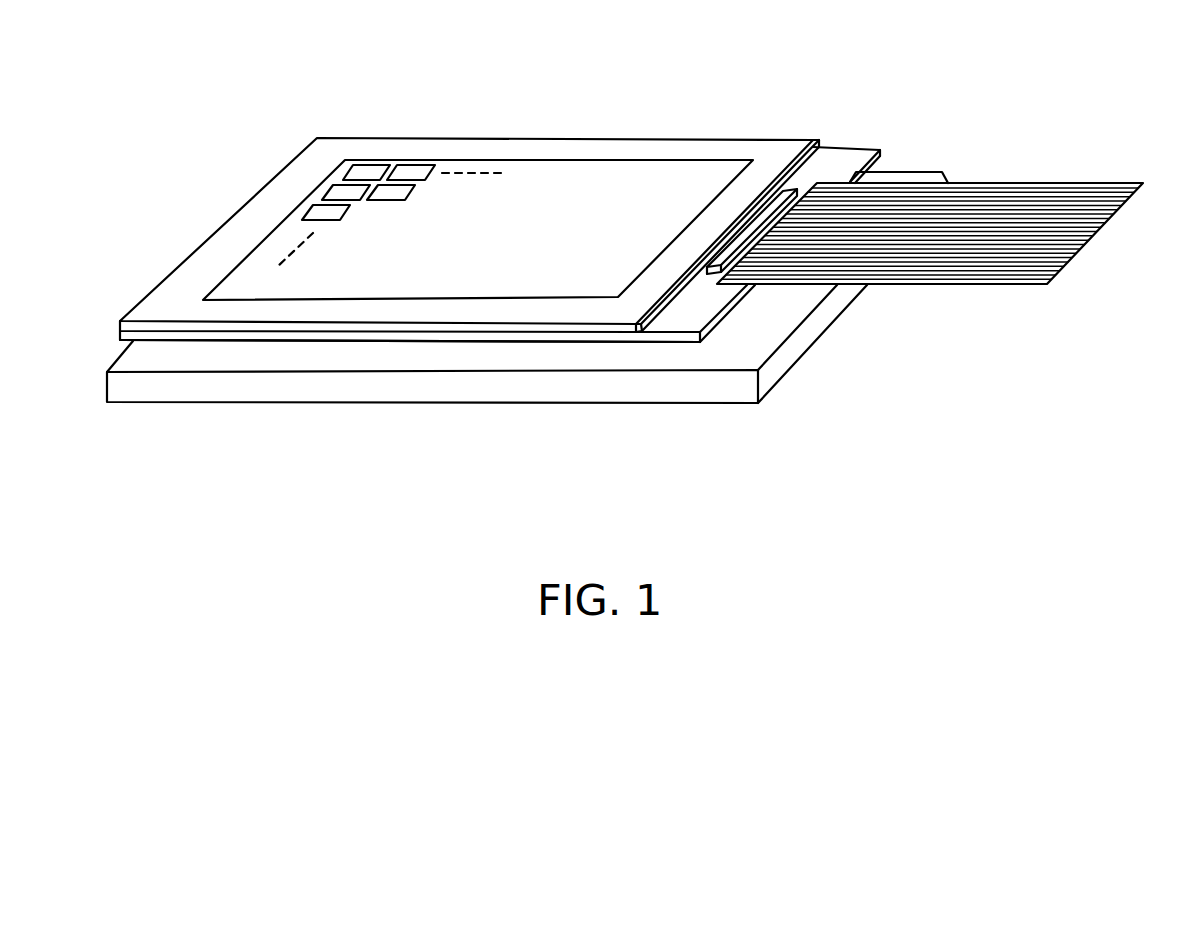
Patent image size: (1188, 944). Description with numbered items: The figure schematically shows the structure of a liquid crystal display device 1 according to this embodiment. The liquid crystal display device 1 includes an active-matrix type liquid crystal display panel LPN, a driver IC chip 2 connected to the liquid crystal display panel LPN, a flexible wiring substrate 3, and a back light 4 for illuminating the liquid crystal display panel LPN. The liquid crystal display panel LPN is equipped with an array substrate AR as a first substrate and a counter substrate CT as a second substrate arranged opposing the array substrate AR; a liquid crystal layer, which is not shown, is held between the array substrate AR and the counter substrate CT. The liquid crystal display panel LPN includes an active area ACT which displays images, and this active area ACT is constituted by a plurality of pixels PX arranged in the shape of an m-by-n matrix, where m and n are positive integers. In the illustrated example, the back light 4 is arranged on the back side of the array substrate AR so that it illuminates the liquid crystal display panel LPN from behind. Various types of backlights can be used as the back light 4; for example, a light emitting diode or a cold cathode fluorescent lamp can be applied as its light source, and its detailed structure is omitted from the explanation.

The liquid crystal display device 1 is at (903, 105).
The driver IC chip 2 is at (778, 197).
The flexible wiring substrate 3 is at (1079, 182).
The back light 4 is at (128, 393).
The pixel PX is at (374, 158).
The active area ACT is at (408, 307).
The counter substrate CT is at (502, 327).
The array substrate AR is at (562, 335).
The liquid crystal display panel LPN is at (672, 350).